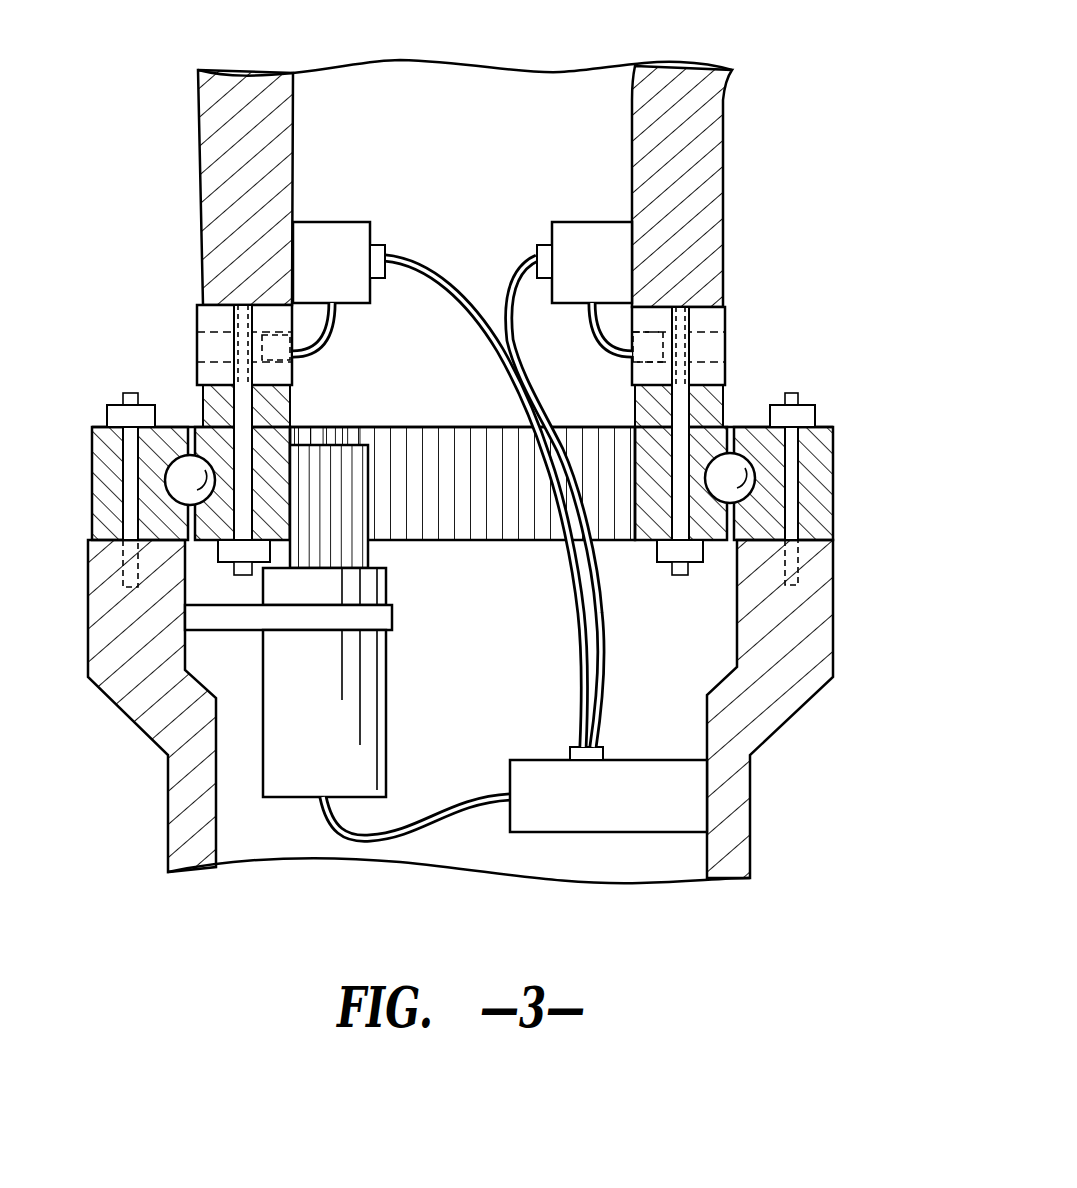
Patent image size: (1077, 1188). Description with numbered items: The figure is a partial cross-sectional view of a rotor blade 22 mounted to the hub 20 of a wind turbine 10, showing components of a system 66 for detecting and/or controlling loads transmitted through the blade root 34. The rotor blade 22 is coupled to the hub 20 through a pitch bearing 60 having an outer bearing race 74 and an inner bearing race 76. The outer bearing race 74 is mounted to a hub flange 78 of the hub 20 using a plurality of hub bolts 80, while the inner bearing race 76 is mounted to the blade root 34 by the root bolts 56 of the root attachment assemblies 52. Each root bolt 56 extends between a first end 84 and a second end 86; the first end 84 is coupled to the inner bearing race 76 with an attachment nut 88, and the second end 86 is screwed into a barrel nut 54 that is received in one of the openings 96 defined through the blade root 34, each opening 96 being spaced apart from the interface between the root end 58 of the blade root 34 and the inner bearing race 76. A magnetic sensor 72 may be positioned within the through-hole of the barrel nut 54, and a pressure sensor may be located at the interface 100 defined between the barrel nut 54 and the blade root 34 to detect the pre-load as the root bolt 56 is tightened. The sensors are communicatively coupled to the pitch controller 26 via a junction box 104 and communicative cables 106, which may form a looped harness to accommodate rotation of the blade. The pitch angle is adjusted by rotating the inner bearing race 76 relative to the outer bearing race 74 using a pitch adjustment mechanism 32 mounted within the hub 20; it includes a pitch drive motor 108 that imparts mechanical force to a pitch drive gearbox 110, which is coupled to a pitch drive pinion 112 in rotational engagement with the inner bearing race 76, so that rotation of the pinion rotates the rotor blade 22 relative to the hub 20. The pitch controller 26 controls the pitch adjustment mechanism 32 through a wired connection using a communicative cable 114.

The wind turbine 10 is at (148, 792).
The hub 20 is at (437, 730).
The rotor blade 22 is at (679, 58).
The pitch controller 26 is at (608, 789).
The pitch adjustment mechanism 32 is at (323, 682).
The blade root 34 is at (215, 158).
The root attachment assembly 52 is at (461, 324).
The barrel nut 54 is at (205, 320).
The root bolt 56 is at (245, 472).
The root end 58 is at (192, 433).
The pitch bearing 60 is at (835, 462).
The system for detecting and/or controlling loads 66 is at (462, 249).
The magnetic sensor 72 is at (292, 370).
The outer bearing race 74 is at (105, 505).
The inner bearing race 76 is at (652, 532).
The hub flange 78 is at (100, 628).
The hub bolts 80 is at (135, 478).
The first end 84 is at (245, 577).
The second end 86 is at (242, 303).
The attachment nut 88 is at (225, 550).
The openings 96 is at (200, 392).
The interface 100 is at (293, 408).
The junction box 104 is at (462, 288).
The communicative cables 106 is at (440, 285).
The pitch drive motor 108 is at (366, 770).
The pitch drive gearbox 110 is at (368, 588).
The pitch drive pinion 112 is at (343, 510).
The communicative cable 114 is at (370, 842).